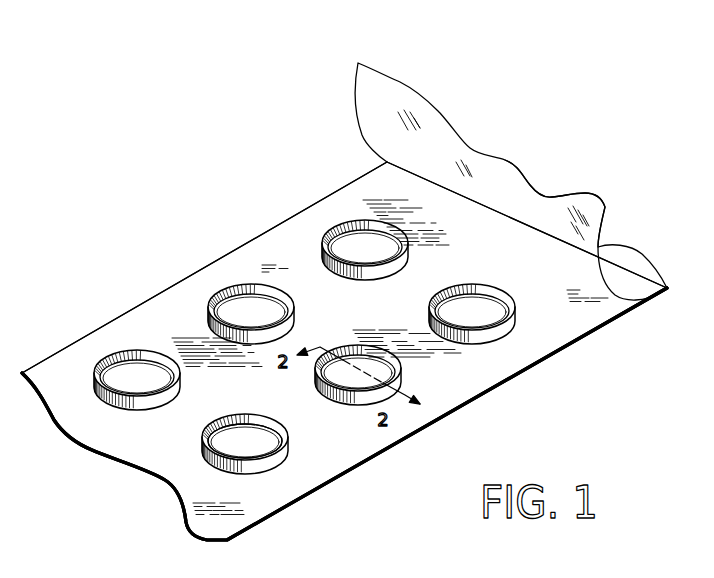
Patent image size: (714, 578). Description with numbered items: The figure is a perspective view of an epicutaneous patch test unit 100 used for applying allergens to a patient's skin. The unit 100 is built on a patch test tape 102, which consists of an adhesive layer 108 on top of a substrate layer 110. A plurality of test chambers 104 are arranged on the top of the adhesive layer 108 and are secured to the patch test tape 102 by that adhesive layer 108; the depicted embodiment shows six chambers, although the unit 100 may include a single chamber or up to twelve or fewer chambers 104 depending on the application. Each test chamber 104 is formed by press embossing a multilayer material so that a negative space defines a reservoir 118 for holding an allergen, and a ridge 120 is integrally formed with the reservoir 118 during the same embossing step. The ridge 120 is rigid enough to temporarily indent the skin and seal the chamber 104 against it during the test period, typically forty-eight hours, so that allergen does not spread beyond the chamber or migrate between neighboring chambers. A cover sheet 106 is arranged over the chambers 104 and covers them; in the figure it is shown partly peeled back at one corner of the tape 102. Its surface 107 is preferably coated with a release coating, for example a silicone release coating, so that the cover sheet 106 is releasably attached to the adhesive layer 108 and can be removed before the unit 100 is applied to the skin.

The epicutaneous patch test unit 100 is at (118, 268).
The patch test tape 102 is at (262, 260).
The test chamber 104 is at (514, 320).
The cover sheet 106 is at (363, 103).
The surface of the cover sheet 107 is at (517, 185).
The adhesive layer 108 is at (332, 462).
The substrate layer 110 is at (273, 517).
The reservoir 118 is at (262, 432).
The ridge 120 is at (233, 418).